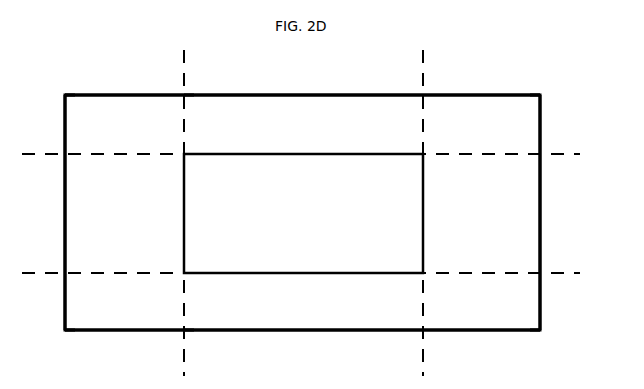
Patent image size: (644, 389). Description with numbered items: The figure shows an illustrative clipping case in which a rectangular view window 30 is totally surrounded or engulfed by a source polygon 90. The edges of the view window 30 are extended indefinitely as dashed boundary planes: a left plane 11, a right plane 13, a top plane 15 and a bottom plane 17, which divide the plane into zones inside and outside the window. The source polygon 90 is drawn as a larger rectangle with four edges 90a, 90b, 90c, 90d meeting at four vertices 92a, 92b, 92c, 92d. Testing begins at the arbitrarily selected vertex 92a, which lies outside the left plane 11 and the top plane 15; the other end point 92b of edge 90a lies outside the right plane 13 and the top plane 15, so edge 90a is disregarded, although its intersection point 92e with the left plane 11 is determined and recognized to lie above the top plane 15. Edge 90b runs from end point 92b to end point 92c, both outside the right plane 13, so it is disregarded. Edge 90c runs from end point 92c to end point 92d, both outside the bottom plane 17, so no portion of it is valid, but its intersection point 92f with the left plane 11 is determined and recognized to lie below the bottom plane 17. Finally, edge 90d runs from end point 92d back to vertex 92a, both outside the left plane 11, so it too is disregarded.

The source polygon 90 is at (494, 134).
The view window 30 is at (396, 198).
The left plane 11 is at (184, 56).
The right plane 13 is at (425, 56).
The top plane 15 is at (578, 153).
The bottom plane 17 is at (578, 272).
The edge 90a is at (272, 95).
The edge 90b is at (543, 212).
The edge 90c is at (270, 333).
The edge 90d is at (64, 213).
The vertex 92a is at (71, 96).
The end point 92b is at (544, 97).
The end point 92c is at (542, 329).
The end point 92d is at (64, 331).
The intersection point 92e is at (192, 96).
The intersection point 92f is at (192, 330).